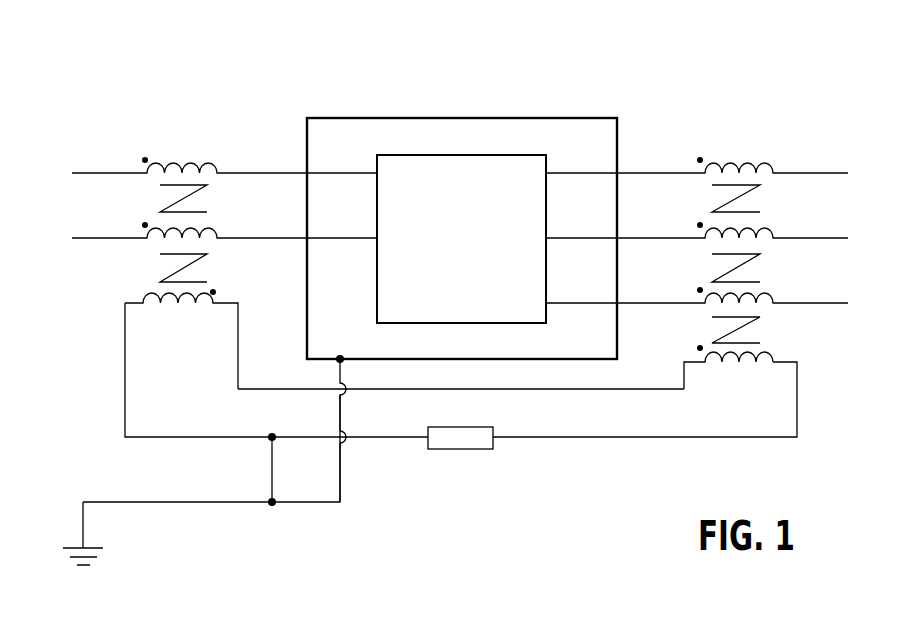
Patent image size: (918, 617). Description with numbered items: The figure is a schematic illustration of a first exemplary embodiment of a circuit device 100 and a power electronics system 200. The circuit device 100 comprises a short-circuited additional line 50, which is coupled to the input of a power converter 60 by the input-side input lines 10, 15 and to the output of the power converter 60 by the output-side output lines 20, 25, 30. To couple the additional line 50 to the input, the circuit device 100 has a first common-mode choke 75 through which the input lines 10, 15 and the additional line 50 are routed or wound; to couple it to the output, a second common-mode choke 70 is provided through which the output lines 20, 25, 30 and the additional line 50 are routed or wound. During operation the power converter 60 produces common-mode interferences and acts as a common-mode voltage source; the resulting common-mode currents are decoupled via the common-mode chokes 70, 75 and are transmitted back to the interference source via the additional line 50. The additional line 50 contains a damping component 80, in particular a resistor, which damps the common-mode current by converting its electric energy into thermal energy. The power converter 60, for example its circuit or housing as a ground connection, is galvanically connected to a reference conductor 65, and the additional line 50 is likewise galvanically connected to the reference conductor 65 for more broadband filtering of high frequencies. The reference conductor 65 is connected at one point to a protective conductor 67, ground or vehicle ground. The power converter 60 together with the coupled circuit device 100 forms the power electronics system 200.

The input line 10 is at (277, 172).
The input line 15 is at (270, 237).
The output line 20 is at (668, 172).
The output line 25 is at (660, 237).
The output line 30 is at (665, 302).
The additional line 50 is at (197, 437).
The power converter 60 is at (577, 135).
The reference conductor 65 is at (180, 502).
The protective conductor 67 is at (86, 532).
The second common-mode choke 70 is at (731, 366).
The first common-mode choke 75 is at (147, 301).
The damping component 80 is at (477, 441).
The circuit device 100 is at (200, 92).
The power electronics system 200 is at (455, 286).